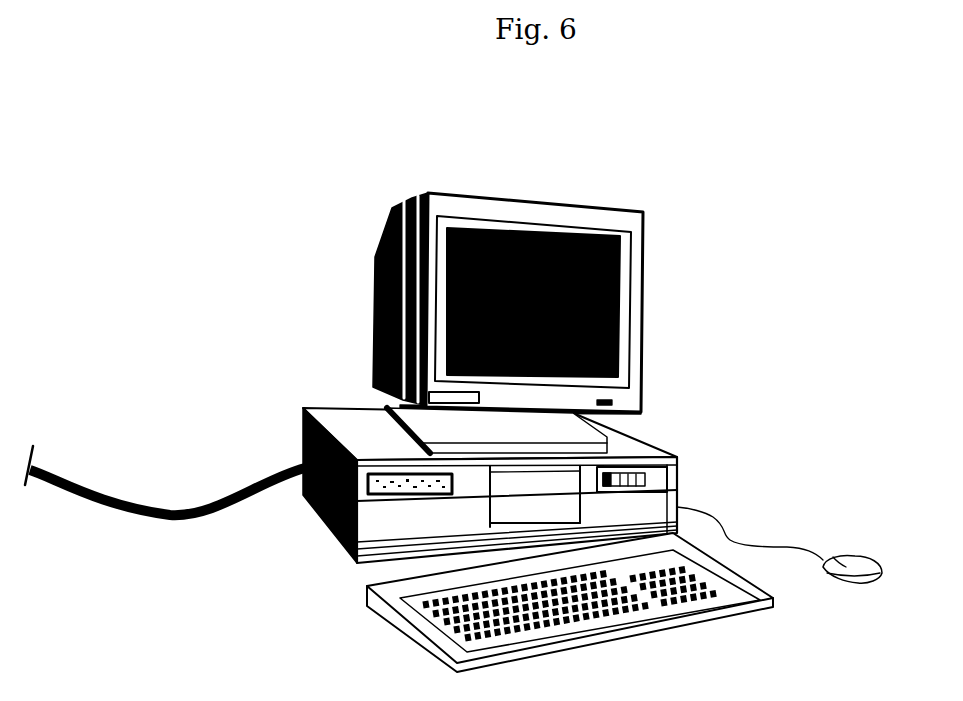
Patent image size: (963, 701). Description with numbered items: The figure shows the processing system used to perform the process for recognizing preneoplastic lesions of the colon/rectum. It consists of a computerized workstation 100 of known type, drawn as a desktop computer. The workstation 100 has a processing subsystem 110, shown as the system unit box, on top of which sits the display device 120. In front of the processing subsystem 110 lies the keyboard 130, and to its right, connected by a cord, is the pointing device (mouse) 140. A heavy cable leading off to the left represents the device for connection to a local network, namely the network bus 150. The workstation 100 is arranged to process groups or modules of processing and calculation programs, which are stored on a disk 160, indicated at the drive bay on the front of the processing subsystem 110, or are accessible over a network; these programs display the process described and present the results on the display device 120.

The computerized workstation 100 is at (358, 186).
The processing subsystem 110 is at (345, 427).
The display device 120 is at (632, 222).
The keyboard 130 is at (395, 590).
The pointing device (mouse) 140 is at (863, 565).
The device for connection to a local network (network bus) 150 is at (180, 508).
The disk 160 is at (643, 503).